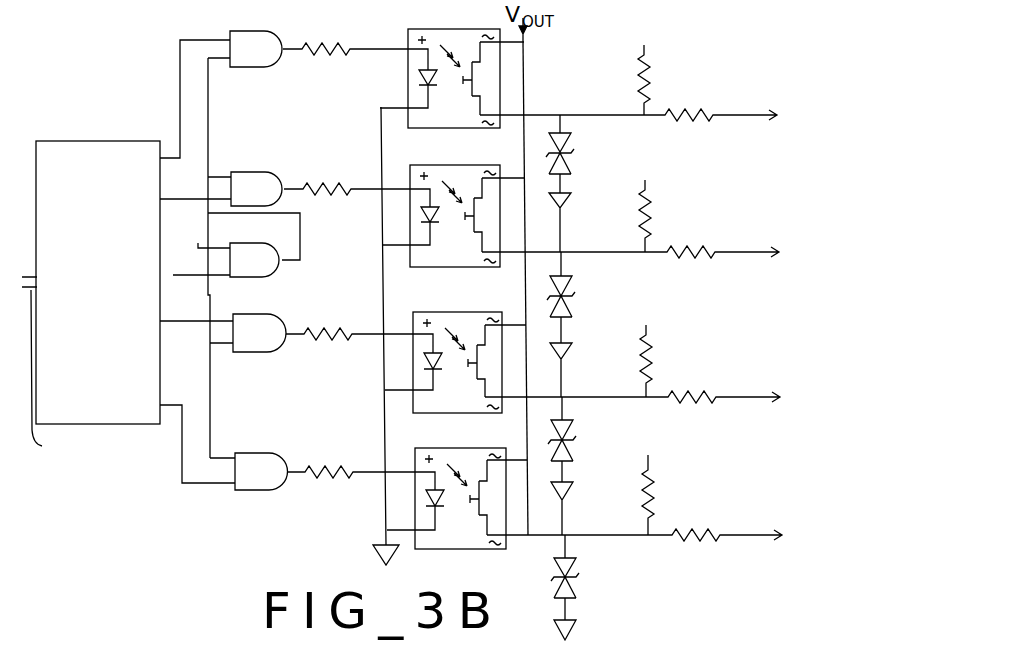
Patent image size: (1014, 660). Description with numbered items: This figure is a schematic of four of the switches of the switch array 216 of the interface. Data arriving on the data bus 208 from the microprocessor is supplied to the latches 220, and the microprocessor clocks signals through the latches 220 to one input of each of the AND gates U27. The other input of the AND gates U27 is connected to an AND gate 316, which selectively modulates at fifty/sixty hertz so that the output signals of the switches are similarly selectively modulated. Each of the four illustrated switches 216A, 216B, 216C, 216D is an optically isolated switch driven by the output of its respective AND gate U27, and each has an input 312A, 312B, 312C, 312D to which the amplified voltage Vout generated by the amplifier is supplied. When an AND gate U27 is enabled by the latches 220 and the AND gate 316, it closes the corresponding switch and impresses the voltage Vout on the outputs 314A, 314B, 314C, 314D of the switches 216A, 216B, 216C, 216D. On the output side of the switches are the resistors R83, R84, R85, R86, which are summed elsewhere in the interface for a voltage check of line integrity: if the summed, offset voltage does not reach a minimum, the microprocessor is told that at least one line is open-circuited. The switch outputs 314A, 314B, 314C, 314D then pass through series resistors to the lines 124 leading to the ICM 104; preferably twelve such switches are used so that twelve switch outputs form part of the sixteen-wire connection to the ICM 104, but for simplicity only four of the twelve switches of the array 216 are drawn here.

The latches 220 is at (125, 330).
The data bus 208 is at (62, 397).
The switch array 216 is at (287, 540).
The AND gate 316 is at (287, 244).
The AND gates U27 is at (259, 260).
The input 312A is at (509, 44).
The input 312B is at (517, 178).
The input 312C is at (519, 325).
The input 312D is at (522, 460).
The switch 216A is at (409, 80).
The switch 216B is at (502, 214).
The switch 216C is at (527, 362).
The switch 216D is at (507, 501).
The output 314A is at (512, 115).
The output 314B is at (540, 252).
The output 314C is at (537, 397).
The output 314D is at (524, 535).
The resistor R83 is at (649, 64).
The resistor R84 is at (651, 208).
The resistor R85 is at (652, 350).
The resistor R86 is at (654, 490).
The output connections to ICM 124 is at (756, 77).
The ICM 104 is at (814, 255).